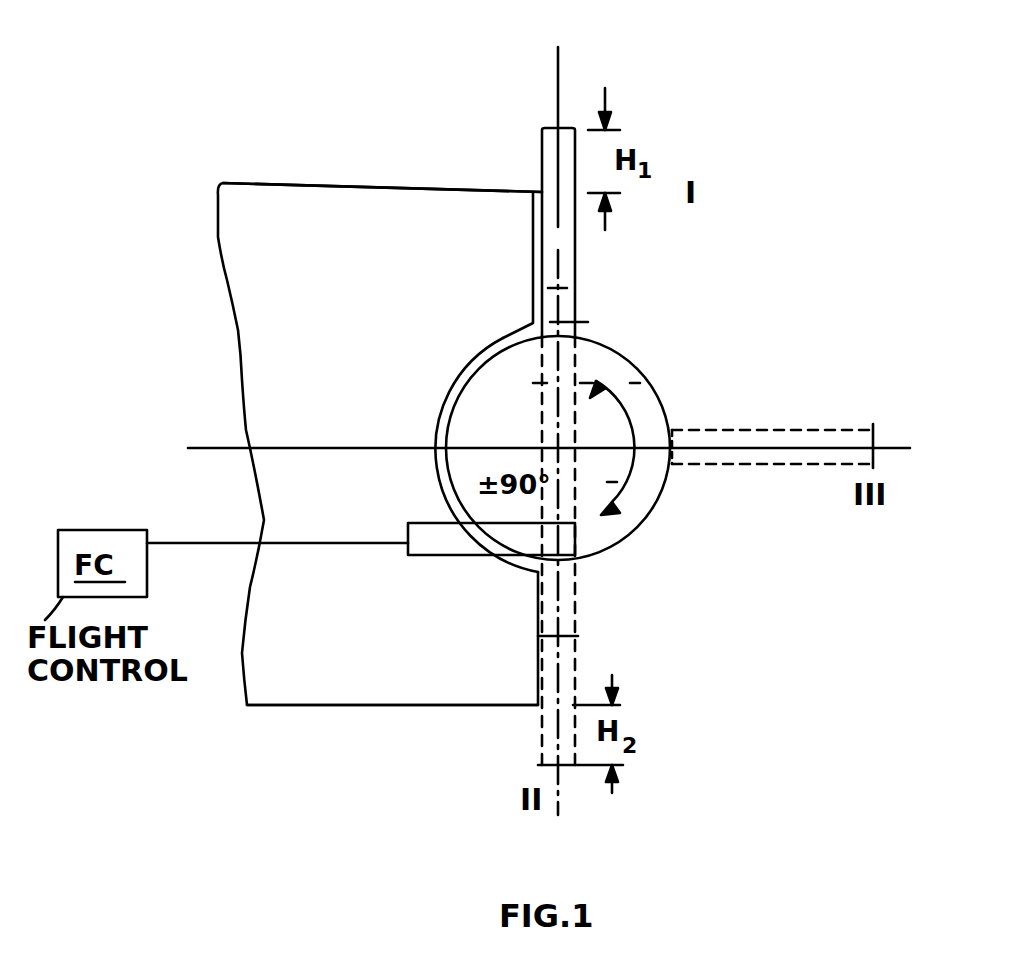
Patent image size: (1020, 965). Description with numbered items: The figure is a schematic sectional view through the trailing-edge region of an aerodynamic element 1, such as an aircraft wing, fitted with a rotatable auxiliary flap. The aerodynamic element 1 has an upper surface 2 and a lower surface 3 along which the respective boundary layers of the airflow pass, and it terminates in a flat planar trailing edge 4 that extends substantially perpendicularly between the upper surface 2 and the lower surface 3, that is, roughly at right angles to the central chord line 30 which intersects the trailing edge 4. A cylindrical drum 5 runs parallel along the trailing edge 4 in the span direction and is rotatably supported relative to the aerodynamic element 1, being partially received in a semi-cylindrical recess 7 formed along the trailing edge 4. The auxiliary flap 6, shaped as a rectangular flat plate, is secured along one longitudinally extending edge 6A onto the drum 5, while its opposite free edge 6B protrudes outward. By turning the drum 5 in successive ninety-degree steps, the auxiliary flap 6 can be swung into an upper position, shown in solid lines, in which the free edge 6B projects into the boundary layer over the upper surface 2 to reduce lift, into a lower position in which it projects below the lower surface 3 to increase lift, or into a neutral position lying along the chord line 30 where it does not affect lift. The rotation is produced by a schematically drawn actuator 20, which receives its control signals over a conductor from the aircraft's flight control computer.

The aerodynamic element 1 is at (388, 672).
The upper surface 2 is at (353, 185).
The lower surface 3 is at (330, 707).
The trailing edge 4 is at (578, 635).
The drum 5 is at (600, 532).
The auxiliary flap 6 is at (563, 155).
The longitudinally extending edge 6A is at (672, 430).
The free edge 6B is at (563, 153).
The semi-cylindrical recess 7 is at (450, 390).
The actuator 20 is at (435, 537).
The chord line 30 is at (192, 453).